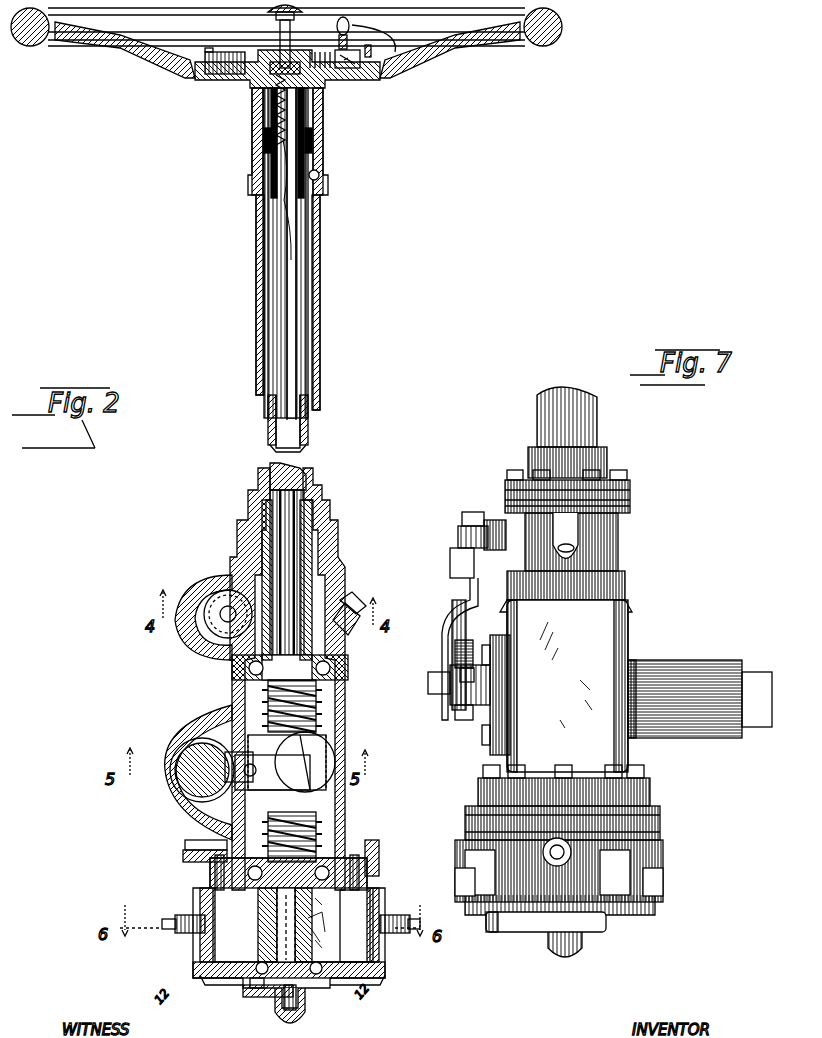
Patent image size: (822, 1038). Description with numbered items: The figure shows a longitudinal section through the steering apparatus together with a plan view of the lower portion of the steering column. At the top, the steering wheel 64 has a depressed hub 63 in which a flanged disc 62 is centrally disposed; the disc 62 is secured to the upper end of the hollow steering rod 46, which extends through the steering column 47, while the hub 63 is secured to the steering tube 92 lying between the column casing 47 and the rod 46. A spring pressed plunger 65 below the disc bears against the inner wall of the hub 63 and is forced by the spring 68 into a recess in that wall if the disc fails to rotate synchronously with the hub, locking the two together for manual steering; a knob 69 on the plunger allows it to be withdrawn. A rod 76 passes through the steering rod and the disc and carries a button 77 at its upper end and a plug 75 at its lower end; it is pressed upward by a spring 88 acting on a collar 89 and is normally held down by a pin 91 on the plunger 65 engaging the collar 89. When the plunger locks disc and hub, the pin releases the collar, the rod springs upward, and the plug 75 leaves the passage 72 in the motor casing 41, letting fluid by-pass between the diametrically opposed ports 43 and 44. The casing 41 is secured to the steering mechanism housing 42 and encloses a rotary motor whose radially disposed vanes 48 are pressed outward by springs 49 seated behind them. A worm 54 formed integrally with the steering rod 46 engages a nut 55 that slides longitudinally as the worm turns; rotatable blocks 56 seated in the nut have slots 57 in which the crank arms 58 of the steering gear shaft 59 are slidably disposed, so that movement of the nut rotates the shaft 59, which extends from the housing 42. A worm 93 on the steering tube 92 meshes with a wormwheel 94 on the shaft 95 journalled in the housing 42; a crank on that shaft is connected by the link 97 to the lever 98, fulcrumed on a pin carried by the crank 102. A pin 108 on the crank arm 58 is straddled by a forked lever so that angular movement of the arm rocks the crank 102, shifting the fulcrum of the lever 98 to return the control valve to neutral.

In FIG. 2, the steering wheel 64 is at (36, 46).
In FIG. 2, the depressed hub 63 is at (190, 70).
In FIG. 2, the flanged disc 62 is at (210, 80).
In FIG. 2, the button 77 is at (278, 20).
In FIG. 2, the knob 69 is at (400, 50).
In FIG. 2, the spring pressed plunger 65 is at (355, 66).
In FIG. 2, the spring 68 is at (352, 80).
In FIG. 2, the pin 91 is at (328, 92).
In FIG. 2, the collar 89 is at (268, 80).
In FIG. 2, the spring 88 is at (276, 120).
In FIG. 2, the steering tube 92 is at (318, 262).
In FIG. 2, the steering column 47 is at (320, 378).
In FIG. 7, the steering column 47 is at (600, 424).
In FIG. 2, the rod 76 is at (285, 465).
In FIG. 2, the steering mechanism housing 42 is at (346, 675).
In FIG. 7, the steering mechanism housing 42 is at (566, 621).
In FIG. 2, the worm 93 is at (345, 602).
In FIG. 2, the wormwheel 94 is at (200, 632).
In FIG. 2, the shaft 95 is at (228, 606).
In FIG. 2, the worm 54 is at (318, 698).
In FIG. 2, the nut 55 is at (320, 742).
In FIG. 2, the rotatable blocks 56 is at (275, 745).
In FIG. 2, the slots 57 is at (312, 765).
In FIG. 2, the crank arms 58 is at (272, 773).
In FIG. 2, the pin 108 is at (248, 765).
In FIG. 2, the steering gear shaft 59 is at (195, 777).
In FIG. 7, the steering gear shaft 59 is at (757, 672).
In FIG. 2, the steering rod 46 is at (300, 865).
In FIG. 2, the vanes 48 is at (284, 914).
In FIG. 2, the springs 49 is at (345, 908).
In FIG. 7, the springs 49 is at (559, 898).
In FIG. 2, the port 44 is at (185, 915).
In FIG. 2, the port 43 is at (392, 918).
In FIG. 7, the port 43 is at (571, 852).
In FIG. 2, the passage 72 is at (305, 1000).
In FIG. 2, the plug 75 is at (288, 995).
In FIG. 7, the link 97 is at (465, 576).
In FIG. 7, the lever 98 is at (450, 640).
In FIG. 7, the crank 102 is at (460, 718).
In FIG. 7, the casing 41 is at (478, 812).